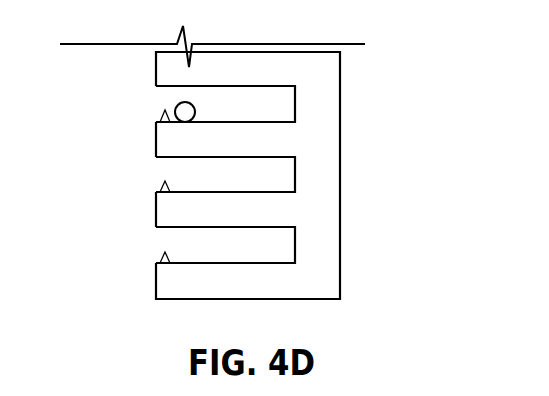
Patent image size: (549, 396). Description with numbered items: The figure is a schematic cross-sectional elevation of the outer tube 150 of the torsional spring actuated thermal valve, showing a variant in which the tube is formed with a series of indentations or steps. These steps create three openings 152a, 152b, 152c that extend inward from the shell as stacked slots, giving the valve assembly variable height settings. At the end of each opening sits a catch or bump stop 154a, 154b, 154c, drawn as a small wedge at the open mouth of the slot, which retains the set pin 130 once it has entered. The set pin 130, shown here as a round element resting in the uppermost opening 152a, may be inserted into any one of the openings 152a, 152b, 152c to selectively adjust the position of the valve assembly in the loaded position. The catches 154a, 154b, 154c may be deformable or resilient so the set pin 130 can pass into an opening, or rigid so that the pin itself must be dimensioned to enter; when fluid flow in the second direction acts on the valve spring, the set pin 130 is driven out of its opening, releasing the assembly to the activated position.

The set pin 130 is at (176, 108).
The outer tube 150 is at (318, 118).
The first opening 152a is at (225, 105).
The second opening 152b is at (243, 172).
The third opening 152c is at (255, 247).
The first catch 154a is at (162, 118).
The second catch 154b is at (163, 188).
The third catch 154c is at (163, 257).